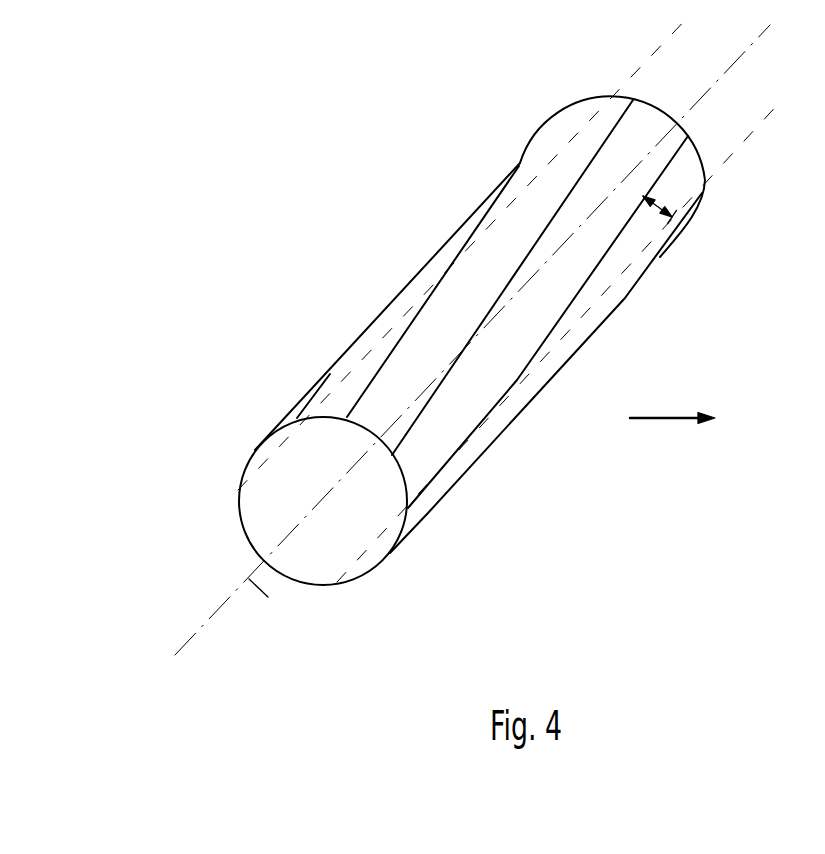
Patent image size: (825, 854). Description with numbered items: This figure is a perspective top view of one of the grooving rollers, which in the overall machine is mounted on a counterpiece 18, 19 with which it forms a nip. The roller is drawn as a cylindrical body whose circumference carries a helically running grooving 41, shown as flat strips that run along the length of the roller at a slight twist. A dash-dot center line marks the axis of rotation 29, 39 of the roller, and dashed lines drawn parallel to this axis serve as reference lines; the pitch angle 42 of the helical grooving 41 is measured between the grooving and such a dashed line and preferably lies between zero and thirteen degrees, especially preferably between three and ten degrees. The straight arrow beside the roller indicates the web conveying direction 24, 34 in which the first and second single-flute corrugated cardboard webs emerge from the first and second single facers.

The counterpiece 18 is at (478, 334).
The counterpiece 19 is at (373, 219).
The helically running grooving 41 is at (570, 297).
The pitch angle 42 is at (671, 212).
The web conveying direction 24 is at (672, 382).
The web conveying direction 34 is at (663, 415).
The axis of rotation 29 is at (307, 639).
The axis of rotation 39 is at (273, 606).